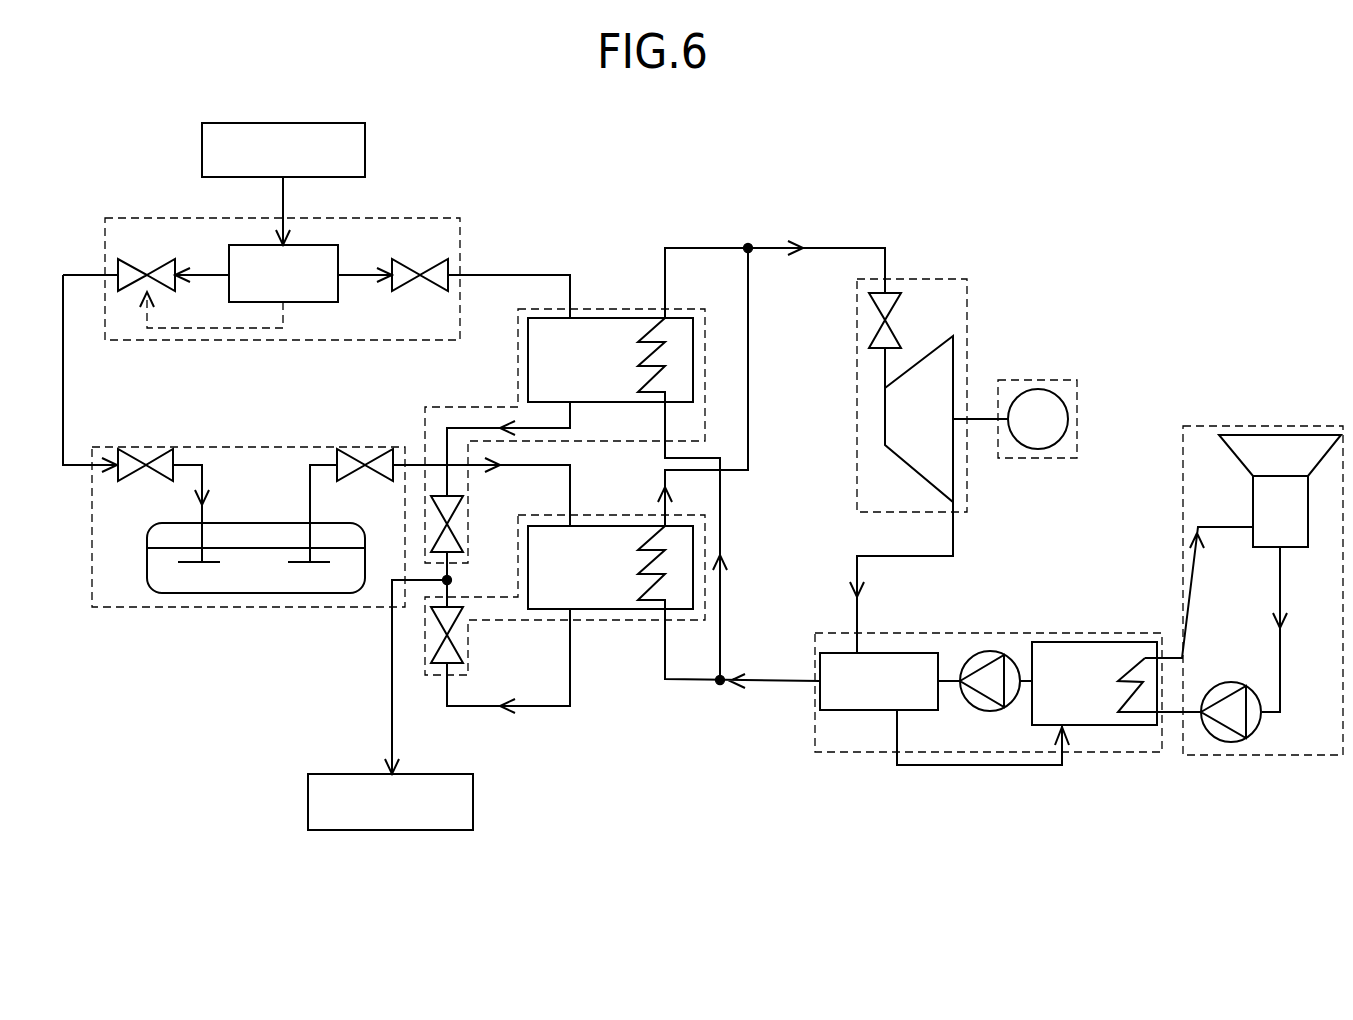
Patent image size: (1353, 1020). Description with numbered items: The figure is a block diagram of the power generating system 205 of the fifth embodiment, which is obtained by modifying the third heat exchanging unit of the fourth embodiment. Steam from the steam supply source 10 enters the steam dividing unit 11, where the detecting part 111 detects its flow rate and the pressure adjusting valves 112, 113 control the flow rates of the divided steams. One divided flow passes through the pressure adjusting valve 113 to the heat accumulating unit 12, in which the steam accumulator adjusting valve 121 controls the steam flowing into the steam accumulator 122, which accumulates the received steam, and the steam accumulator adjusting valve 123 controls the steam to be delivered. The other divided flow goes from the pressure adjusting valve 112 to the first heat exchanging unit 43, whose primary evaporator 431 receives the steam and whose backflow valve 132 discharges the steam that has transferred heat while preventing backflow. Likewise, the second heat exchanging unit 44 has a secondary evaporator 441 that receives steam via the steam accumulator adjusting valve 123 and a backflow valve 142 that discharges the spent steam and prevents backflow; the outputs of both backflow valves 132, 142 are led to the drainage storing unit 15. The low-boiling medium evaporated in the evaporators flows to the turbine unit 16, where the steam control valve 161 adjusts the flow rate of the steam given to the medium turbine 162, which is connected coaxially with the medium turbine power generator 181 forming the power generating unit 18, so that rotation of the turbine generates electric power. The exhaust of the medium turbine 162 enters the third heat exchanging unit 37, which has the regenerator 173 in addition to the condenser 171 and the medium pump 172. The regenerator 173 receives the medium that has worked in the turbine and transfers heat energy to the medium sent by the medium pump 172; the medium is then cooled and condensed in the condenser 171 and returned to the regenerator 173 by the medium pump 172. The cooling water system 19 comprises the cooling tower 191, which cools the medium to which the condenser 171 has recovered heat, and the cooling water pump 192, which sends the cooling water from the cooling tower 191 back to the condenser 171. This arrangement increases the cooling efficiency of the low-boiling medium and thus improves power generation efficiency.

The power generating system 205 is at (766, 806).
The steam supply source 10 is at (365, 150).
The steam dividing unit 11 is at (514, 201).
The detecting part 111 is at (338, 250).
The pressure adjusting valve 112 is at (448, 265).
The pressure adjusting valve 113 is at (118, 262).
The heat accumulating unit 12 is at (83, 632).
The steam accumulator adjusting valve 121 is at (173, 450).
The steam accumulator 122 is at (285, 597).
The steam accumulator adjusting valve 123 is at (337, 450).
The first heat exchanging unit 43 is at (622, 299).
The primary evaporator 431 is at (628, 403).
The backflow valve 132 is at (463, 497).
The second heat exchanging unit 44 is at (630, 511).
The secondary evaporator 441 is at (628, 610).
The backflow valve 142 is at (463, 662).
The drainage storing unit 15 is at (473, 800).
The turbine unit 16 is at (955, 274).
The steam control valve 161 is at (858, 356).
The medium turbine 162 is at (884, 445).
The power generating unit 18 is at (1107, 402).
The medium turbine power generator 181 is at (1033, 389).
The third heat exchanging unit 37 is at (1055, 624).
The condenser 171 is at (1118, 641).
The medium pump 172 is at (985, 650).
The regenerator 173 is at (897, 652).
The cooling water system 19 is at (1334, 419).
The cooling tower 191 is at (1252, 491).
The cooling water pump 192 is at (1229, 682).